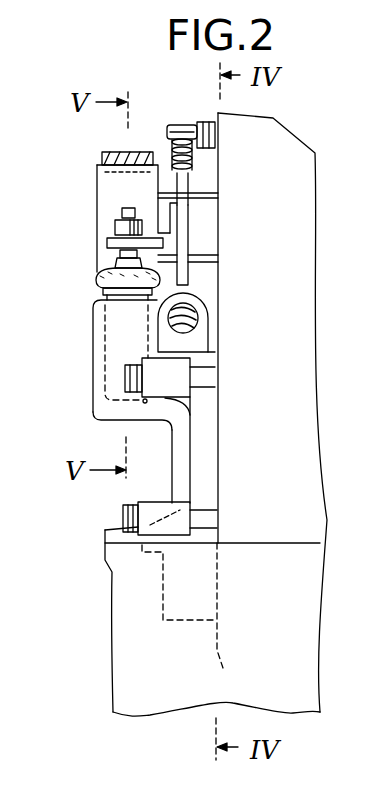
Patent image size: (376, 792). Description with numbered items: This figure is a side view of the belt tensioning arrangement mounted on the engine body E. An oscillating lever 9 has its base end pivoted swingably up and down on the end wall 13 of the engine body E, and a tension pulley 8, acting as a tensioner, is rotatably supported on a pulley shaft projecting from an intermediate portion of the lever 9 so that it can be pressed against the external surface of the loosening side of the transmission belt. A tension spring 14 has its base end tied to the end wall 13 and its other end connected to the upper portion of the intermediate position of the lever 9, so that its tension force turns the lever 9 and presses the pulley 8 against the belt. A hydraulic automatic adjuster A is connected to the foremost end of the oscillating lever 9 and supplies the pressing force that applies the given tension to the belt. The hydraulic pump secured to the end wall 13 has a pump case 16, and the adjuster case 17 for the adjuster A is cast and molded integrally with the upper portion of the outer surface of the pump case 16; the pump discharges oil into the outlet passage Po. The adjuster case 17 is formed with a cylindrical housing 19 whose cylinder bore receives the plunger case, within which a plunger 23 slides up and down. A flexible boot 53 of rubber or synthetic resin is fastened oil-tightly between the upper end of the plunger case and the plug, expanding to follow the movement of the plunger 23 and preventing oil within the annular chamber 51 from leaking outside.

The tension pulley 8 is at (102, 195).
The oscillating lever 9 is at (183, 230).
The end wall 13 is at (213, 283).
The tension spring 14 is at (175, 160).
The pump case 16 is at (175, 472).
The adjuster case 17 is at (150, 412).
The cylindrical housing 19 is at (93, 349).
The plunger 23 is at (107, 295).
The annular chamber 51 is at (102, 157).
The flexible boot 53 is at (98, 277).
The hydraulic automatic adjuster A is at (89, 390).
The engine body E is at (302, 124).
The outlet passage Po is at (193, 314).